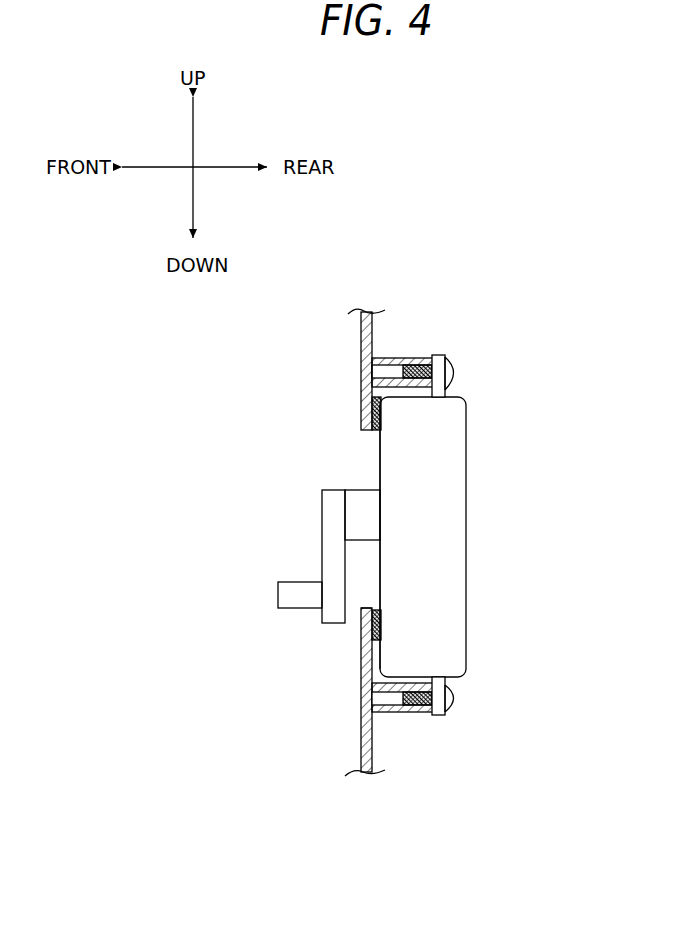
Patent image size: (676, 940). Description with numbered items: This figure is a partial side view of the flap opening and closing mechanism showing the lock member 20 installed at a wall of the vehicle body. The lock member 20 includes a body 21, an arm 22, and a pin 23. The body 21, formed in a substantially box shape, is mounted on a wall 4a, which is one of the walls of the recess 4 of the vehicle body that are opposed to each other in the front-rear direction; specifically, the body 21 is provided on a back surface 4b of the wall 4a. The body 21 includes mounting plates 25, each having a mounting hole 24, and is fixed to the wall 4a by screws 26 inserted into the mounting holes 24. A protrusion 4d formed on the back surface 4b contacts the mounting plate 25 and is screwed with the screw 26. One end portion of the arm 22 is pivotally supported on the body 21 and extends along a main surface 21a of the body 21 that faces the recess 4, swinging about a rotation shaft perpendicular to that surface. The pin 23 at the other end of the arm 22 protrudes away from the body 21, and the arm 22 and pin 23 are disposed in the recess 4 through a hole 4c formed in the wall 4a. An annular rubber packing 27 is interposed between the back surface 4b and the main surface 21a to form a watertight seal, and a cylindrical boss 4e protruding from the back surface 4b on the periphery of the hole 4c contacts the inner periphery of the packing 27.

The recess 4 is at (228, 464).
The wall 4a is at (358, 355).
The back surface 4b is at (370, 755).
The hole 4c is at (360, 606).
The protrusion 4d is at (403, 370).
The boss 4e is at (381, 614).
The lock member 20 is at (532, 414).
The body 21 is at (448, 557).
The main surface 21a is at (377, 457).
The arm 22 is at (320, 540).
The pin 23 is at (298, 610).
The mounting hole 24 is at (452, 366).
The mounting plate 25 is at (438, 356).
The screw 26 is at (457, 382).
The packing 27 is at (365, 383).